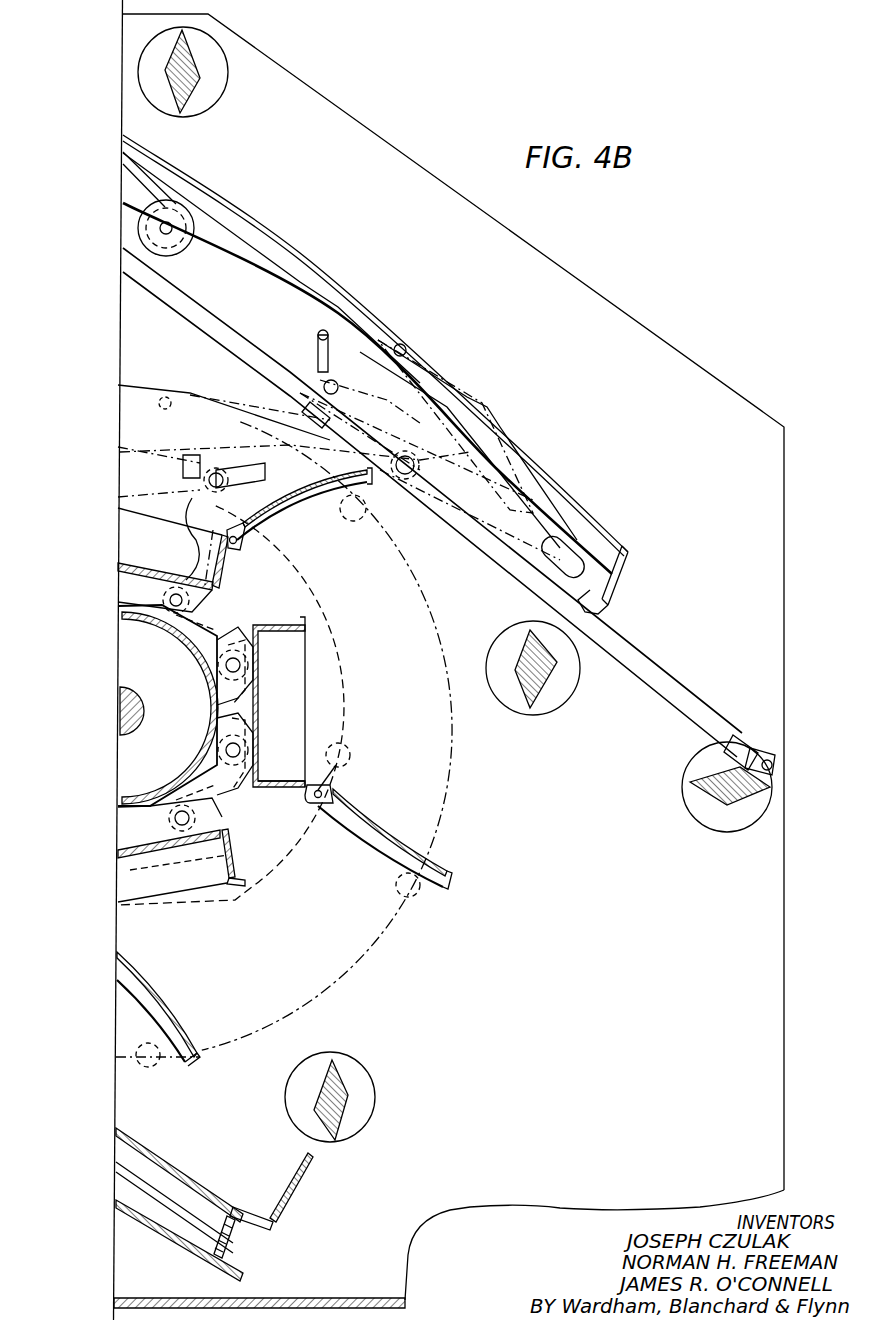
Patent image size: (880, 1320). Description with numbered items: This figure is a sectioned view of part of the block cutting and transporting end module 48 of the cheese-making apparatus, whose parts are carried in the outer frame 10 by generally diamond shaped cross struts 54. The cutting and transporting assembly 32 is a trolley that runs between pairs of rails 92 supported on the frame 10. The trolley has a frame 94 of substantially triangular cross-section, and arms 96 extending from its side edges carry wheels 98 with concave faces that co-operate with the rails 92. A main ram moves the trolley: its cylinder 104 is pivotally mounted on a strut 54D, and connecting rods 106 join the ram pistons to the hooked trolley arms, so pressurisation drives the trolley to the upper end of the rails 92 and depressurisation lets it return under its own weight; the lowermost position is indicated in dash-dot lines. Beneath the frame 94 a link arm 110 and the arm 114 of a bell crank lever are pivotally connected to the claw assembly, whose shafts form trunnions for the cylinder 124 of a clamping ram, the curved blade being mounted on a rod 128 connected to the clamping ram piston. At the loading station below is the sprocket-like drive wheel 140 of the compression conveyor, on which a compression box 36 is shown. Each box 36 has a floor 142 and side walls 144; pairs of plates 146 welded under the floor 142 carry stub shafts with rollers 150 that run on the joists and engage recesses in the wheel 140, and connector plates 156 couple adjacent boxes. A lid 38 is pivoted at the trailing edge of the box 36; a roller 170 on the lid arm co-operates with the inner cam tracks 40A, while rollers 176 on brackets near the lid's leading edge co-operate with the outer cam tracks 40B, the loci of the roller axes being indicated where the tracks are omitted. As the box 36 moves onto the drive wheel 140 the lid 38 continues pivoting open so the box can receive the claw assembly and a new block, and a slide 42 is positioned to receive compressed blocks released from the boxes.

The outer frame 10 is at (540, 268).
The cutting and transporting assembly 32 is at (473, 393).
The compression box 36 is at (142, 557).
The lid 38 is at (276, 510).
The inner set of cam tracks 40A is at (310, 590).
The outer set of cam tracks 40B is at (430, 605).
The slide 42 is at (250, 1205).
The block cutting and transporting end module 48 is at (567, 957).
The cross strut 54 is at (197, 88).
The strut 54D is at (697, 780).
The rails 92 is at (200, 295).
The frame 94 is at (487, 437).
The arms 96 is at (142, 197).
The wheels 98 is at (178, 213).
The cylinder 104 is at (610, 640).
The connecting rods 106 is at (203, 320).
The link arm 110 is at (277, 470).
The arm 114 is at (213, 372).
The cylinder 124 is at (193, 455).
The rod 128 is at (135, 450).
The sprocket-like wheel 140 is at (135, 668).
The floor 142 is at (256, 655).
The side walls 144 is at (297, 781).
The plates 146 is at (243, 643).
The roller 150 is at (215, 745).
The connector plates 156 is at (210, 640).
The roller 170 is at (350, 750).
The rollers 176 is at (410, 897).